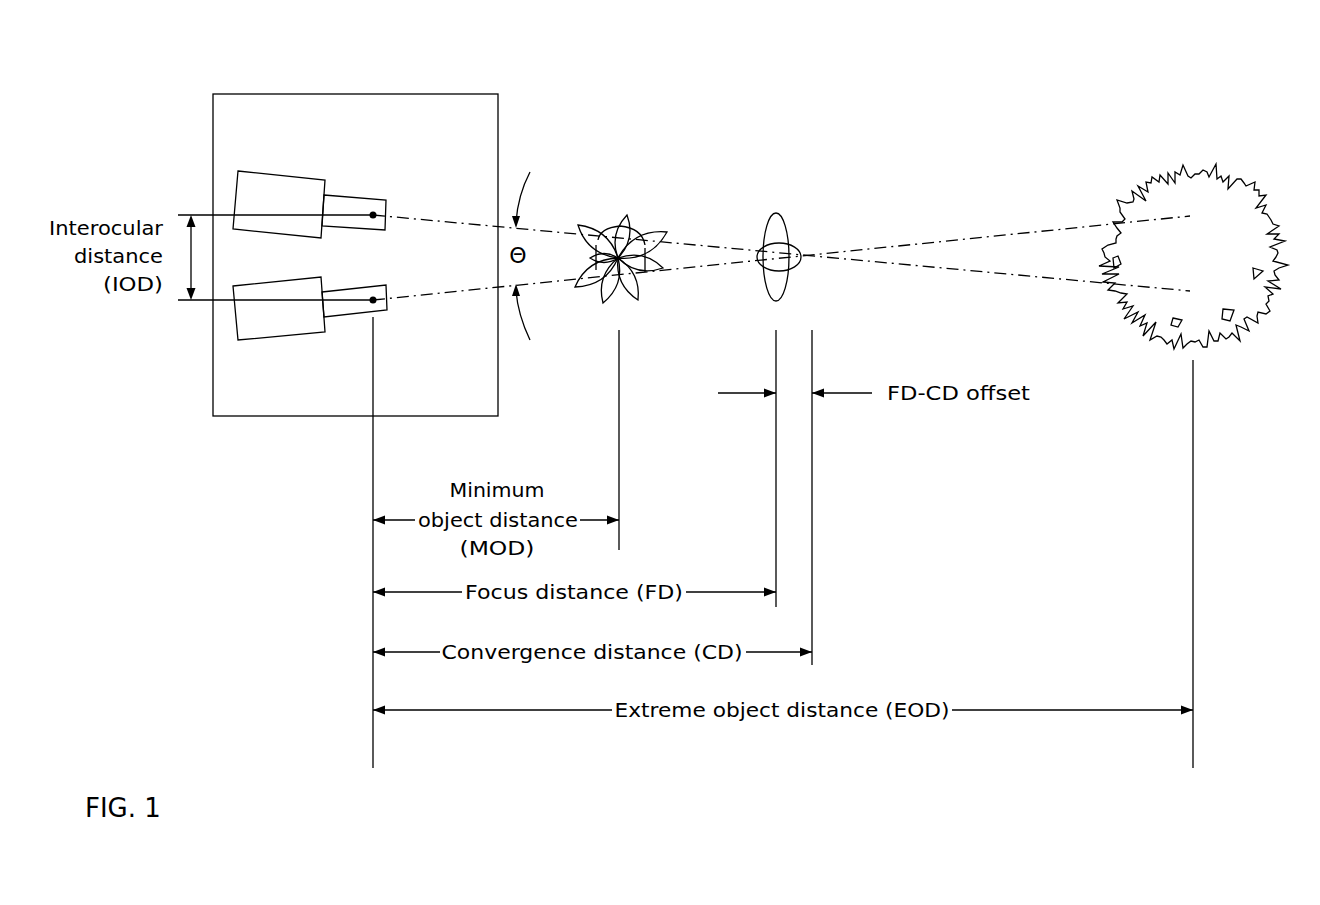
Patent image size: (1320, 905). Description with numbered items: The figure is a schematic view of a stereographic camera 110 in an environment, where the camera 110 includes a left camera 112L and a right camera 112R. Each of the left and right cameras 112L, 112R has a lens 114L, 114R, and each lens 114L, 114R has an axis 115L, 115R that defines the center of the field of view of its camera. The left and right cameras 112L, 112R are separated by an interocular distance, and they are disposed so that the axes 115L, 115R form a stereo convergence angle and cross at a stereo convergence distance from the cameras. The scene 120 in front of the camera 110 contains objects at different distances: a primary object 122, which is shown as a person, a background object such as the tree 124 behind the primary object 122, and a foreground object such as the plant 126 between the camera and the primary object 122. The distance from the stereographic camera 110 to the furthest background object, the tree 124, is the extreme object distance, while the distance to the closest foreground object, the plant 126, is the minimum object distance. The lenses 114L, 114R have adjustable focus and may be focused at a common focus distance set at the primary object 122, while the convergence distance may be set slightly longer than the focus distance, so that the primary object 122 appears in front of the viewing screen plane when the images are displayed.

The stereographic camera 110 is at (355, 255).
The left camera 112L is at (285, 172).
The right camera 112R is at (300, 339).
The lens 114L is at (355, 195).
The lens 114R is at (374, 317).
The axis 115L is at (947, 270).
The axis 115R is at (942, 242).
The scene 120 is at (568, 45).
The primary object 122 is at (785, 215).
The tree 124 is at (1200, 168).
The plant 126 is at (637, 220).